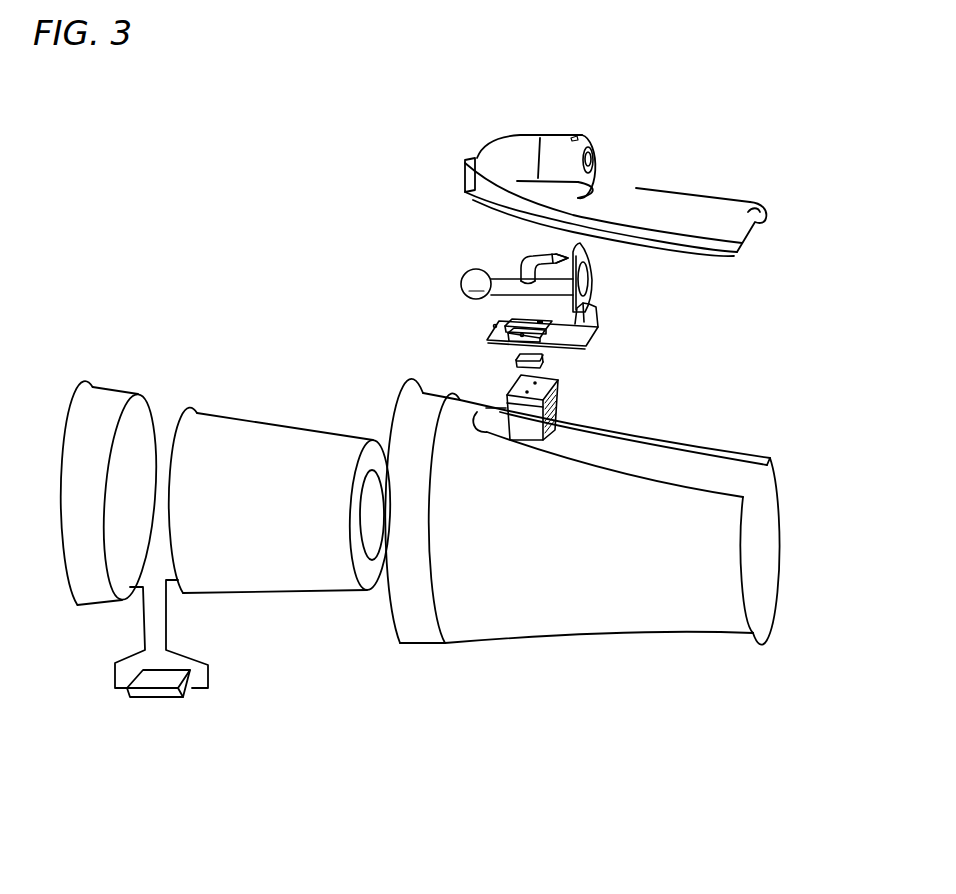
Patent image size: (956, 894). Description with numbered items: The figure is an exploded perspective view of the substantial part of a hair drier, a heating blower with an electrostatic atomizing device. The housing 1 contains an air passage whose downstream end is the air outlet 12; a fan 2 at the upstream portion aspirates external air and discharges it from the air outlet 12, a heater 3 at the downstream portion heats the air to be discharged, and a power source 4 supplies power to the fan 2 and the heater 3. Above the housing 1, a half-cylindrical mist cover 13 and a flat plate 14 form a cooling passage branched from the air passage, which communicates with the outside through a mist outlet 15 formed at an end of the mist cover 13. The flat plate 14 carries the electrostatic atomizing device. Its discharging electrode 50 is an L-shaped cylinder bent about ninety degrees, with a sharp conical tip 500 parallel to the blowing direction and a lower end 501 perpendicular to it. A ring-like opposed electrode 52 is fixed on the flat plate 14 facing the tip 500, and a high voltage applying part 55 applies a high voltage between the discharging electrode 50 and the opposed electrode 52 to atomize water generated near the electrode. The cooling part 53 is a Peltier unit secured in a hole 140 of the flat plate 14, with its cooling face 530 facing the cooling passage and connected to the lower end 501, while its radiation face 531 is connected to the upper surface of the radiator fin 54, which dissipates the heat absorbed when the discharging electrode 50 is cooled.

The housing 1 is at (522, 610).
The air outlet 12 is at (753, 547).
The mist cover 13 is at (553, 142).
The flat plate 14 is at (492, 332).
The hole 140 is at (517, 320).
The mist outlet 15 is at (590, 167).
The fan 2 is at (102, 403).
The heater 3 is at (263, 447).
The power source 4 is at (157, 693).
The discharging electrode 50 is at (517, 252).
The tip 500 is at (565, 257).
The lower end 501 is at (520, 275).
The opposed electrode 52 is at (588, 263).
The cooling part 53 is at (539, 366).
The cooling face 530 is at (544, 357).
The radiation face 531 is at (545, 368).
The radiator fin 54 is at (523, 427).
The high voltage applying part 55 is at (466, 276).